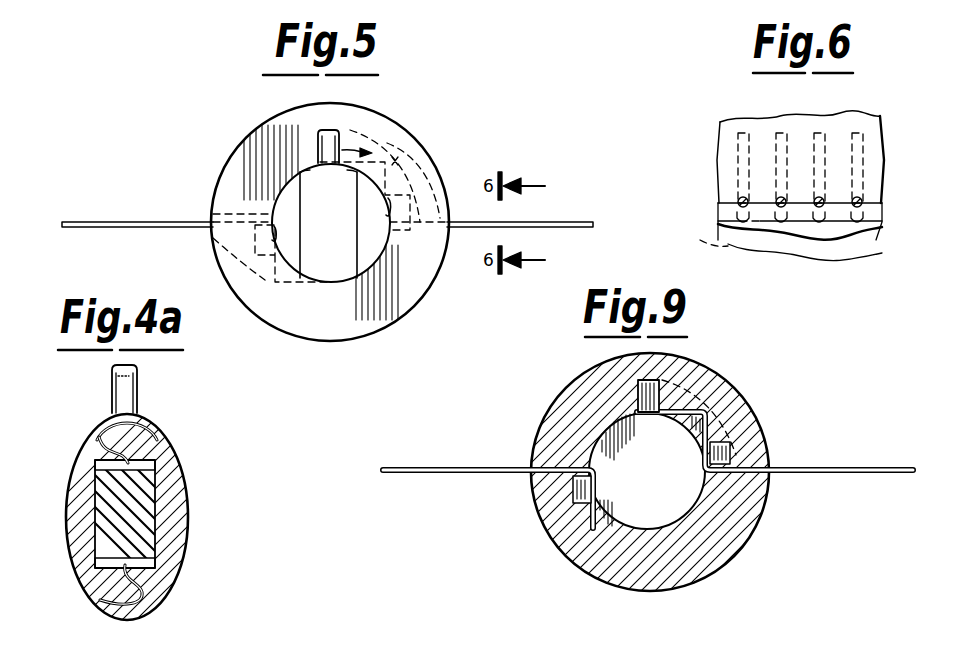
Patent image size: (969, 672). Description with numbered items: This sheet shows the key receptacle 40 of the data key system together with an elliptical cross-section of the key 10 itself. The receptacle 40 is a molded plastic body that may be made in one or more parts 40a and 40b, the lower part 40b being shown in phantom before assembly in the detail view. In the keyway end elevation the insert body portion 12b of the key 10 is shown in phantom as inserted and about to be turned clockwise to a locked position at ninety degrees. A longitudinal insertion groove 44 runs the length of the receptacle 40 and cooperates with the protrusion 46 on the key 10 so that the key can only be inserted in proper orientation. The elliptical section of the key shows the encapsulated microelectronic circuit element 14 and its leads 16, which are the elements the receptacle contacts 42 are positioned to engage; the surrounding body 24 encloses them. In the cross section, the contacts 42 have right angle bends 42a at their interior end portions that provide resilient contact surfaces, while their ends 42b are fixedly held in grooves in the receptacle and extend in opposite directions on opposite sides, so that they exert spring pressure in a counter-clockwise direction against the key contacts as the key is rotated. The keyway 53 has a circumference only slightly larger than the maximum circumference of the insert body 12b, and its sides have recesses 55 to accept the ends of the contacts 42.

In FIG. 5, the key 10 is at (385, 240).
In FIG. 5, the insert body portion 12b is at (345, 252).
In FIG. 4A, the microelectronic circuit element 14 is at (150, 505).
In FIG. 4A, the leads 16 is at (158, 463).
In FIG. 4A, the encapsulating body 24 is at (72, 480).
In FIG. 5, the key receptacle 40 is at (403, 111).
In FIG. 9, the key receptacle 40 is at (727, 374).
In FIG. 5, the receptacle part 40a is at (228, 160).
In FIG. 6, the receptacle part 40a is at (866, 128).
In FIG. 9, the receptacle part 40a is at (552, 412).
In FIG. 5, the receptacle part 40b is at (270, 320).
In FIG. 6, the receptacle part 40b is at (720, 214).
In FIG. 9, the receptacle part 40b is at (550, 512).
In FIG. 5, the contacts 42 is at (128, 221).
In FIG. 6, the contacts 42 is at (857, 208).
In FIG. 9, the contacts 42 is at (422, 476).
In FIG. 5, the right angle bends 42a is at (385, 216).
In FIG. 9, the right angle bends 42a is at (708, 472).
In FIG. 5, the ends 42b is at (410, 152).
In FIG. 9, the ends 42b is at (722, 436).
In FIG. 5, the longitudinal insertion groove 44 is at (336, 140).
In FIG. 9, the longitudinal insertion groove 44 is at (638, 392).
In FIG. 4A, the protrusion 46 is at (138, 378).
In FIG. 5, the keyway 53 is at (356, 233).
In FIG. 9, the keyway 53 is at (690, 497).
In FIG. 9, the recesses 55 is at (690, 420).